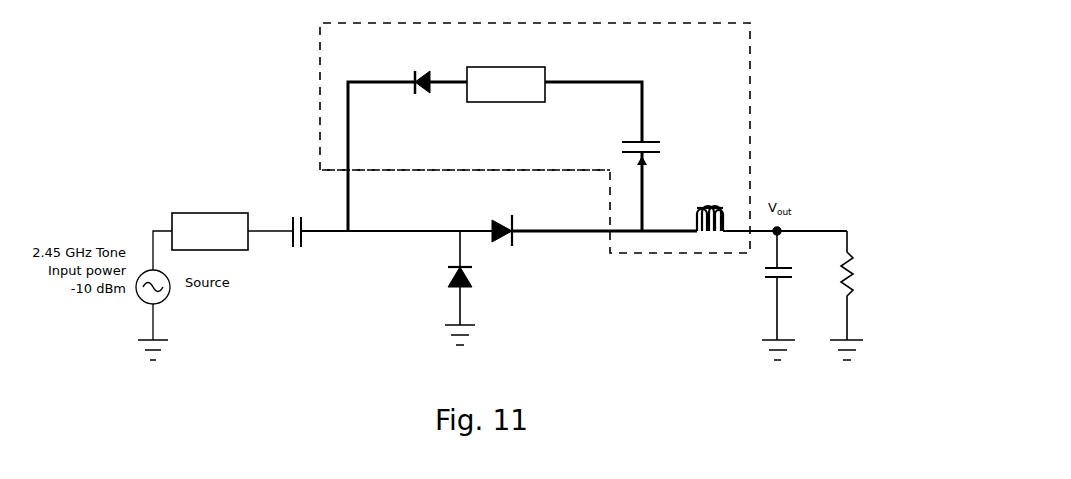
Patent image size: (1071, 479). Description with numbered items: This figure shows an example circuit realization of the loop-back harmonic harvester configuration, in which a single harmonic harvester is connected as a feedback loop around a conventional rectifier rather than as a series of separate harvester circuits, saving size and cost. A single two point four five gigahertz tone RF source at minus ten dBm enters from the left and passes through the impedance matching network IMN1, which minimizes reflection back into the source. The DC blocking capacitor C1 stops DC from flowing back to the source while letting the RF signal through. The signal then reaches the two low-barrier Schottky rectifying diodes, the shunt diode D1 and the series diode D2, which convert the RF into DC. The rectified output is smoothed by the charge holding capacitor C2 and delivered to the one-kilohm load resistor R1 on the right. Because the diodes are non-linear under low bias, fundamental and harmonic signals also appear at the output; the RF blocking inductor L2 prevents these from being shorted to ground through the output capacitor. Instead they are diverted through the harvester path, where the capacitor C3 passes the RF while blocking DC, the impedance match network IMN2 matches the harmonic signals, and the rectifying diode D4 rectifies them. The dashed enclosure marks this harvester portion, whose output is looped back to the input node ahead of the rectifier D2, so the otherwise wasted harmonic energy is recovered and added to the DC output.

The impedance matching network IMN1 is at (210, 231).
The impedance match network circuit IMN2 is at (506, 84).
The DC blocking capacitor C1 is at (294, 215).
The charge holding capacitor C2 is at (764, 295).
The DC blocking capacitor of harmonic harvester C3 is at (657, 184).
The rectifying diode D1 is at (440, 288).
The rectifying diode D2 is at (593, 241).
The rectifying diode of feedback loop D4 is at (440, 68).
The RF blocking inductor L2 is at (466, 178).
The load resistor R1 is at (876, 295).